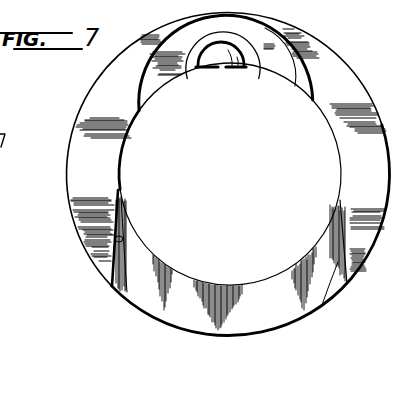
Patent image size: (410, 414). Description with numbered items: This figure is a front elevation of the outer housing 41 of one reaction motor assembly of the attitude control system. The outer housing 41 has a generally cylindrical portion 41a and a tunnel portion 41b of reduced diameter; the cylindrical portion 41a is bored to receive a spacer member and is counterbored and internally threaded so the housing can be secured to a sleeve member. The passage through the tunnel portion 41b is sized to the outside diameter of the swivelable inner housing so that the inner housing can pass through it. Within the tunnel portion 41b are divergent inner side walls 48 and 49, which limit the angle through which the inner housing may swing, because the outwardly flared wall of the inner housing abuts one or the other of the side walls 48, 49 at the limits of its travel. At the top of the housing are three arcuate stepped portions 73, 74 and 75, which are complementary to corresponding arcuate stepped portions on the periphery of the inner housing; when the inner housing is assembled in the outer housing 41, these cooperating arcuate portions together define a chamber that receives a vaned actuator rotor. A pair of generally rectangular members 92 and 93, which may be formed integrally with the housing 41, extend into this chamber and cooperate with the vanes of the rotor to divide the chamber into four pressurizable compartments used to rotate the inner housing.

The outer housing 41 is at (358, 77).
The cylindrical portion 41a is at (204, 336).
The tunnel portion 41b is at (375, 110).
The divergent inner side wall 48 is at (103, 245).
The divergent inner side wall 49 is at (320, 309).
The arcuate stepped portion 73 is at (137, 117).
The arcuate stepped portion 74 is at (188, 80).
The arcuate stepped portion 75 is at (231, 69).
The rectangular member 92 is at (212, 69).
The rectangular member 93 is at (241, 70).